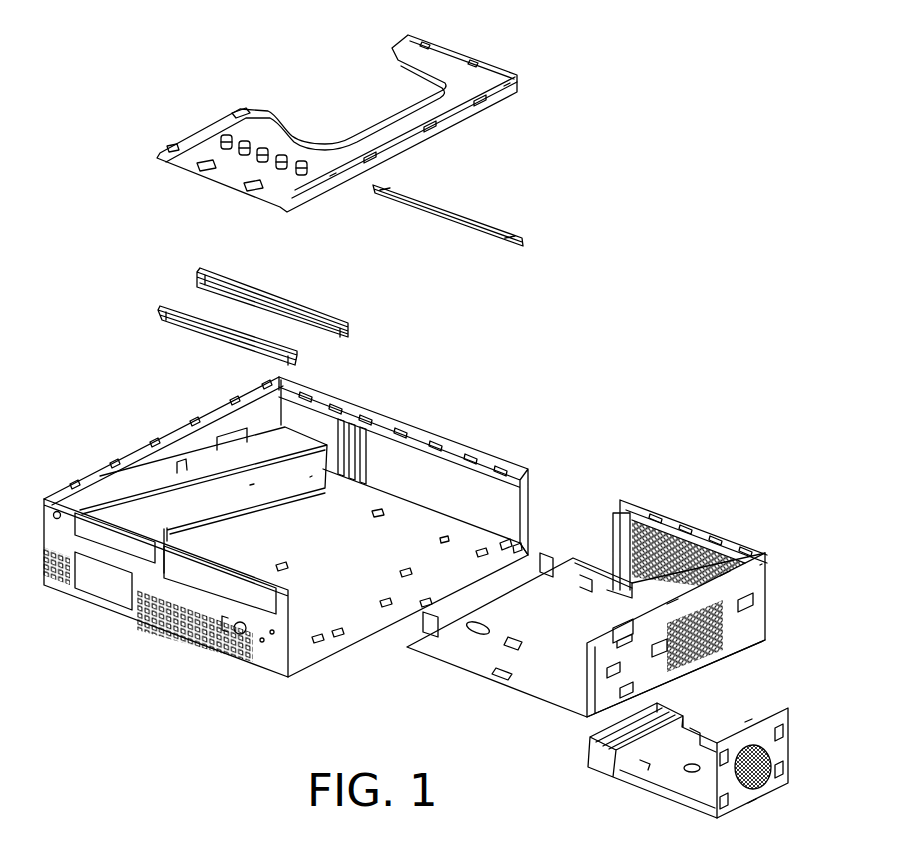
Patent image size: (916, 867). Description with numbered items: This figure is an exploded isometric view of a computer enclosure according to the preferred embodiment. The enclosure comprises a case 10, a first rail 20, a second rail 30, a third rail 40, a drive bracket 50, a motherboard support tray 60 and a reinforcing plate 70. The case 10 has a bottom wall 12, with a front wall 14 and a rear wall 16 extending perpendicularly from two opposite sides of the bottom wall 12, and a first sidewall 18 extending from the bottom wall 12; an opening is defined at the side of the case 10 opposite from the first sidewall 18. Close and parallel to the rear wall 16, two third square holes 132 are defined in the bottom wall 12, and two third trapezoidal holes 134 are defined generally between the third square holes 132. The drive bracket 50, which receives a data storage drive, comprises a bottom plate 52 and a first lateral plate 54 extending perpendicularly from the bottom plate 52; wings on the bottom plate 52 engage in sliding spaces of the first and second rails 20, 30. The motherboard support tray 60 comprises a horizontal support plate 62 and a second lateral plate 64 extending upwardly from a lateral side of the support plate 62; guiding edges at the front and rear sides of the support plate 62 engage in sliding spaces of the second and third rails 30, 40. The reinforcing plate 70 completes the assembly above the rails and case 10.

The case 10 is at (322, 551).
The bottom wall 12 is at (311, 658).
The front wall 14 is at (281, 651).
The rear wall 16 is at (440, 466).
The first sidewall 18 is at (130, 473).
The third square holes 132 is at (515, 547).
The third trapezoidal holes 134 is at (500, 543).
The first rail 20 is at (170, 313).
The second rail 30 is at (233, 280).
The third rail 40 is at (448, 213).
The drive bracket 50 is at (715, 742).
The bottom plate 52 is at (627, 770).
The first lateral plate 54 is at (787, 763).
The motherboard support tray 60 is at (628, 610).
The support plate 62 is at (512, 672).
The second lateral plate 64 is at (757, 588).
The reinforcing plate 70 is at (450, 53).